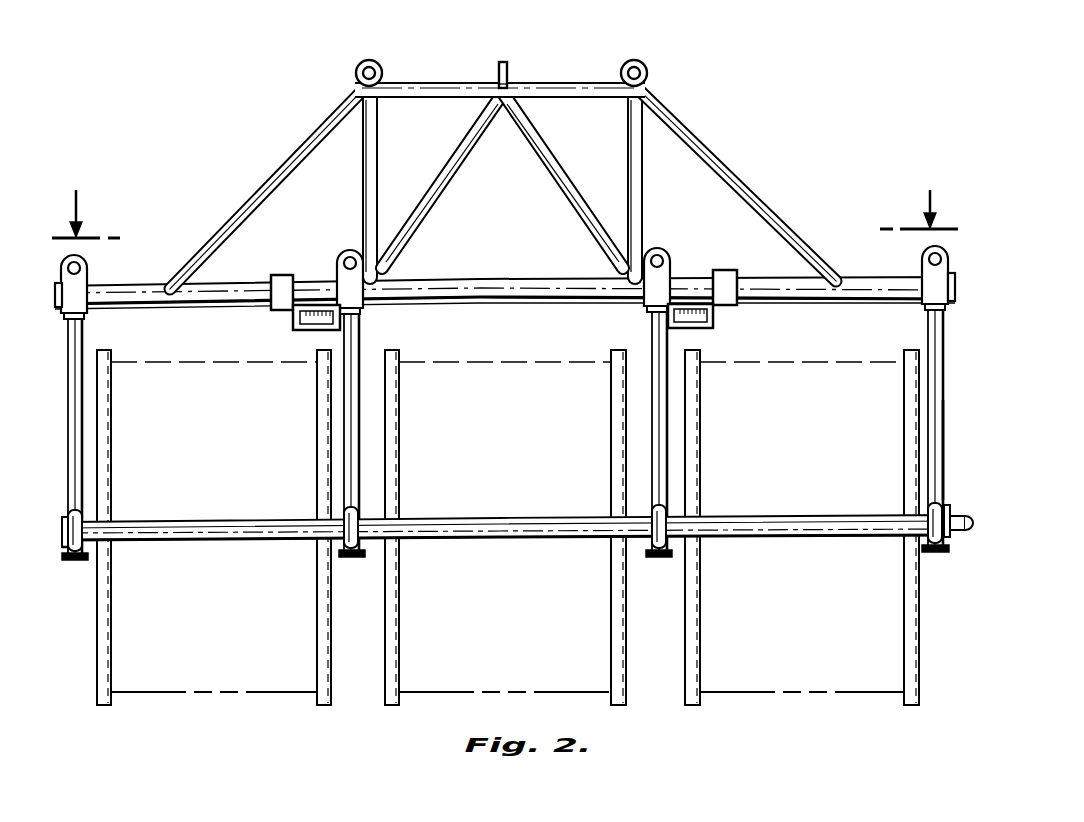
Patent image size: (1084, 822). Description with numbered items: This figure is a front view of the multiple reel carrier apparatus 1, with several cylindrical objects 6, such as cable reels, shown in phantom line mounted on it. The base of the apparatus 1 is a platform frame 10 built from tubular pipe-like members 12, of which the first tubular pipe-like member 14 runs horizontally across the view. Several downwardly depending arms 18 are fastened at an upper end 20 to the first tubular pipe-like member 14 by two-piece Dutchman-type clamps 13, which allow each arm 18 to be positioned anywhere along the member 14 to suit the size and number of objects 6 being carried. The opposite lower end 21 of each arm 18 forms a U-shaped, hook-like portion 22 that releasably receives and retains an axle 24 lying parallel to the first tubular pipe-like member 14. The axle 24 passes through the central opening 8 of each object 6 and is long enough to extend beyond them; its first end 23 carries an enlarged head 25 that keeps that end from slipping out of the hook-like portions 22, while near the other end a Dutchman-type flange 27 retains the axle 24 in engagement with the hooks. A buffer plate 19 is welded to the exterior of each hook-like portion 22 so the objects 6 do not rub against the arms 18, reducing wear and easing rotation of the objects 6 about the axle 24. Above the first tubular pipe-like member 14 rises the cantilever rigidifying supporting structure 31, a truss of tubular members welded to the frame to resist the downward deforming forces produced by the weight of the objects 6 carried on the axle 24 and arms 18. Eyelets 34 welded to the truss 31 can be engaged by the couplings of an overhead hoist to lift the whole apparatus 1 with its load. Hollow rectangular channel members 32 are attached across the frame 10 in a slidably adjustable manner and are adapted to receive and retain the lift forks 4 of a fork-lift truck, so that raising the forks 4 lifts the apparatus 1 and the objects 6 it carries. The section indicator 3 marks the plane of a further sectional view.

The multiple reel carrier apparatus 1 is at (732, 86).
The section line 3- 3 is at (505, 203).
The lift forks 4 is at (313, 305).
The cylindrical objects 6 is at (253, 693).
The central opening 8 is at (290, 522).
The platform frame 10 is at (288, 133).
The tubular pipe-like members 12 is at (776, 276).
The Dutchman-type clamp 13 is at (88, 268).
The first tubular pipe-like member 14 is at (183, 302).
The downwardly depending arms 18 is at (83, 422).
The buffer plate 19 is at (90, 557).
The upper end 20 is at (84, 314).
The lower end 21 is at (938, 480).
The U-shaped hook-like portion 22 is at (78, 512).
The first end 23 is at (67, 524).
The axle 24 is at (215, 521).
The enlarged head 25 is at (65, 548).
The flange 27 is at (952, 512).
The cantilever rigidifying supporting structure 31 is at (737, 158).
The channel members 32 is at (292, 326).
The eyelets 34 is at (366, 59).